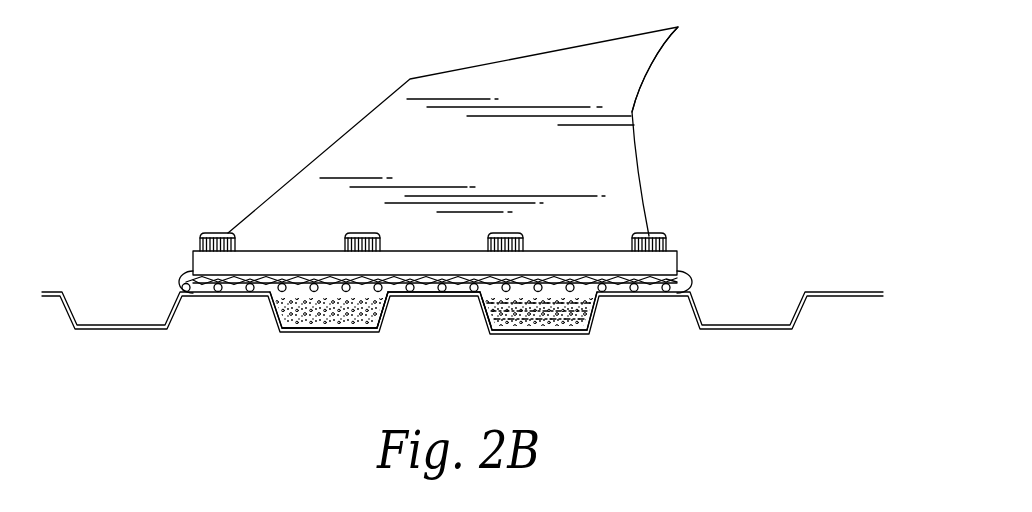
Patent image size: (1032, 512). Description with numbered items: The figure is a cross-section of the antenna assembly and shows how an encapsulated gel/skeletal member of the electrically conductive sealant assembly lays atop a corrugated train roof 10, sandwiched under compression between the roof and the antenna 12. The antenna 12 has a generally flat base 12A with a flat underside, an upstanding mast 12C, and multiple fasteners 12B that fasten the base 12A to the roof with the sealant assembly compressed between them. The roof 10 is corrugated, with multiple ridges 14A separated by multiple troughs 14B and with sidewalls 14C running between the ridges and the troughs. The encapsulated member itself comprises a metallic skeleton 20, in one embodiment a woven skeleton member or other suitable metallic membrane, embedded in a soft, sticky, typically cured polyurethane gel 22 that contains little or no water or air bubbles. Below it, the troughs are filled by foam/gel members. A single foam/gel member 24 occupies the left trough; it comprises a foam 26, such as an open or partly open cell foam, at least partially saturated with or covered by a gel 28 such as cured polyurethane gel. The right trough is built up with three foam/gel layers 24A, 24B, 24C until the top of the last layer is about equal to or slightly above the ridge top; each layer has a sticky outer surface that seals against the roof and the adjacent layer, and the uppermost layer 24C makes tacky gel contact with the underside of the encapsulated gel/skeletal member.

The roofing panel / channel substrate 10 is at (698, 281).
The antenna 12 is at (648, 167).
The base 12A is at (663, 260).
The fasteners 12B is at (643, 236).
The upstanding mast 12C is at (627, 152).
The metallic skeleton 20 is at (602, 278).
The polyurethane gel 22 is at (683, 268).
The foam/gel member 24 is at (272, 303).
The ridges 14A is at (455, 298).
The troughs 14B is at (337, 329).
The sidewalls 14C is at (383, 318).
The foam/gel layer 24A is at (516, 329).
The foam/gel layer 24B is at (484, 310).
The uppermost foam/gel layer 24C is at (480, 301).
The foam 26 is at (590, 313).
The gel 28 is at (563, 318).